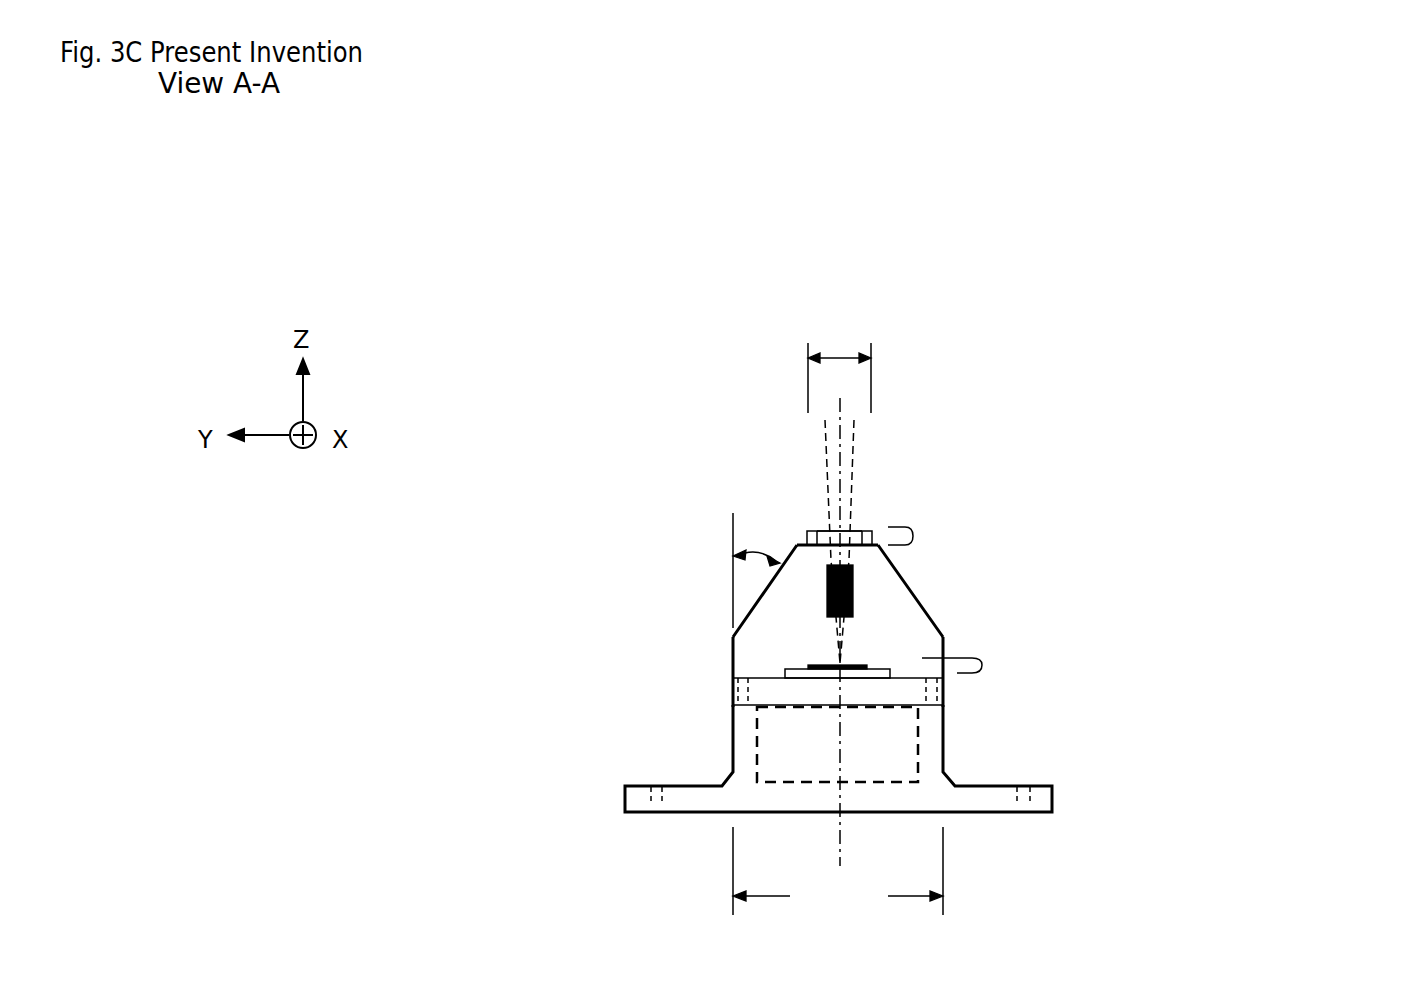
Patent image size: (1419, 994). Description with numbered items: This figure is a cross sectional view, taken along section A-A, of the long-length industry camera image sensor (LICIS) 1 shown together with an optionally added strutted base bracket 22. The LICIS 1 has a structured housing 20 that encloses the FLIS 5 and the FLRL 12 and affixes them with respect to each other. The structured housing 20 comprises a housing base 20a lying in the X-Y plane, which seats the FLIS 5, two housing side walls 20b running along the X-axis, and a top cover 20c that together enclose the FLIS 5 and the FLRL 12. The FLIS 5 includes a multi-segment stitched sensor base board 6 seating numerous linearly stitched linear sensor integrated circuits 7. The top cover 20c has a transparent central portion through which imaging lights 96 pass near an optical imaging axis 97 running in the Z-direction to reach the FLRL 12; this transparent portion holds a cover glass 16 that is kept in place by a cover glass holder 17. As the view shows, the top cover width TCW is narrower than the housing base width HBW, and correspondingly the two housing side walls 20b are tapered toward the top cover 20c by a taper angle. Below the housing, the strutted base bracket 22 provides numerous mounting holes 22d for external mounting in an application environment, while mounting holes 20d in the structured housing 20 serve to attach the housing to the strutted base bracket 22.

The long-length industry camera image sensor (LICIS) 1 is at (1250, 292).
The FLIS 5 is at (983, 665).
The multi-segment stitched sensor base board (SSBB) 6 is at (783, 670).
The linear sensor integrated circuits (LSIC) 7 is at (863, 660).
The FLRL 12 is at (856, 578).
The cover glass 16 is at (862, 530).
The cover glass holder 17 is at (870, 532).
The structured housing 20 is at (1088, 702).
The housing base 20a is at (947, 688).
The housing side walls 20b is at (764, 593).
The top cover 20c is at (915, 532).
The mounting holes 20d is at (738, 690).
The strutted base bracket 22 is at (963, 707).
The mounting holes 22d is at (651, 800).
The imaging lights 96 is at (826, 486).
The optical imaging axis 97 is at (838, 438).
The top cover width TCW is at (840, 350).
The housing base width HBW is at (838, 871).